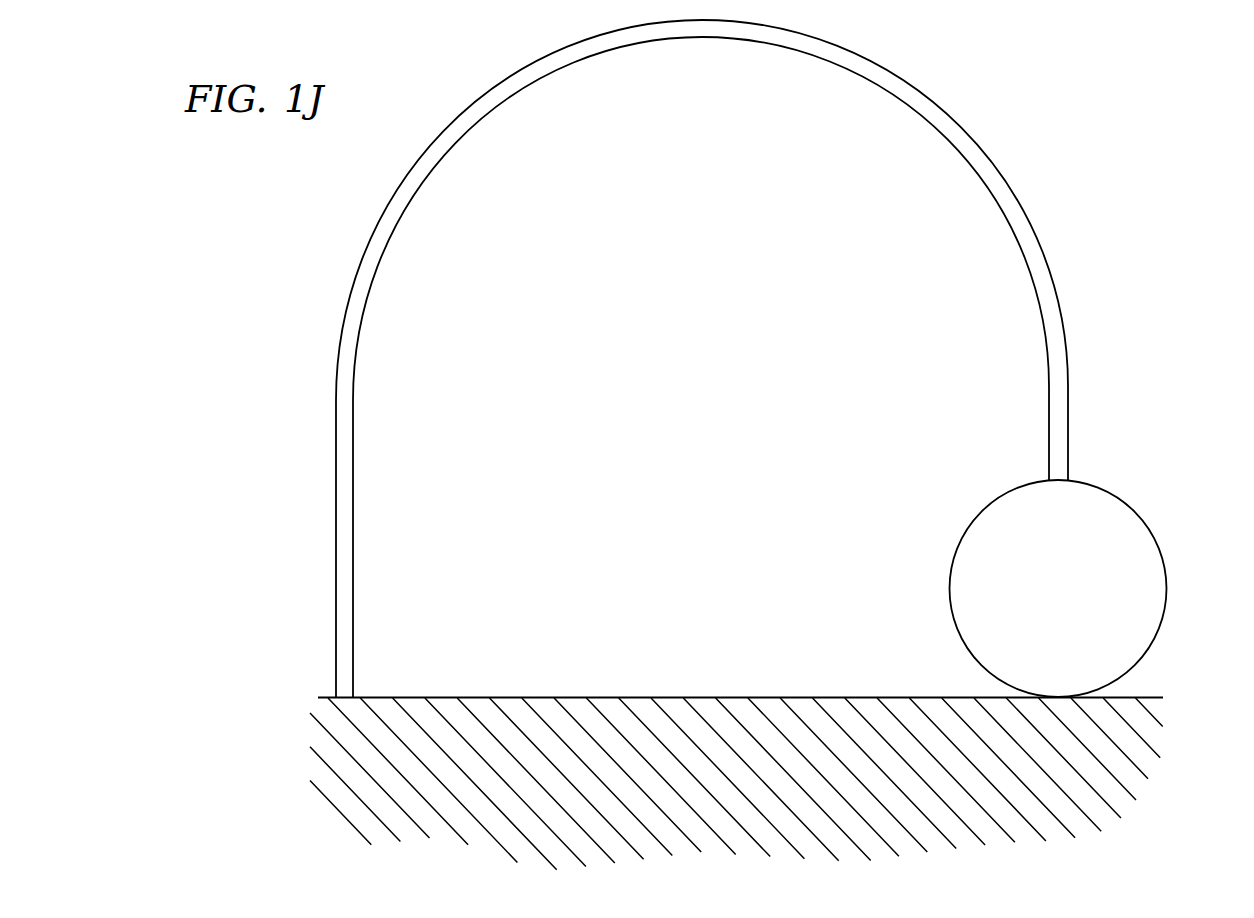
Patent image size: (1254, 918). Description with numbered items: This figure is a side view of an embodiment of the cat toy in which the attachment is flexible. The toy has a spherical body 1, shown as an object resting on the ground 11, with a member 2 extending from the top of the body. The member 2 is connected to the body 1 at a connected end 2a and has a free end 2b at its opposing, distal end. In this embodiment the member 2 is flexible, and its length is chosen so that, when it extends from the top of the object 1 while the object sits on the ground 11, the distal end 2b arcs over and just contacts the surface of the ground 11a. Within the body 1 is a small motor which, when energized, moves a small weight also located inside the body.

The spherical body 1 is at (1095, 524).
The semi-rigid member 2 is at (893, 83).
The connected end 2a is at (1047, 479).
The free end 2b is at (355, 696).
The ground 11 is at (792, 760).
The surface of the ground 11a is at (669, 698).